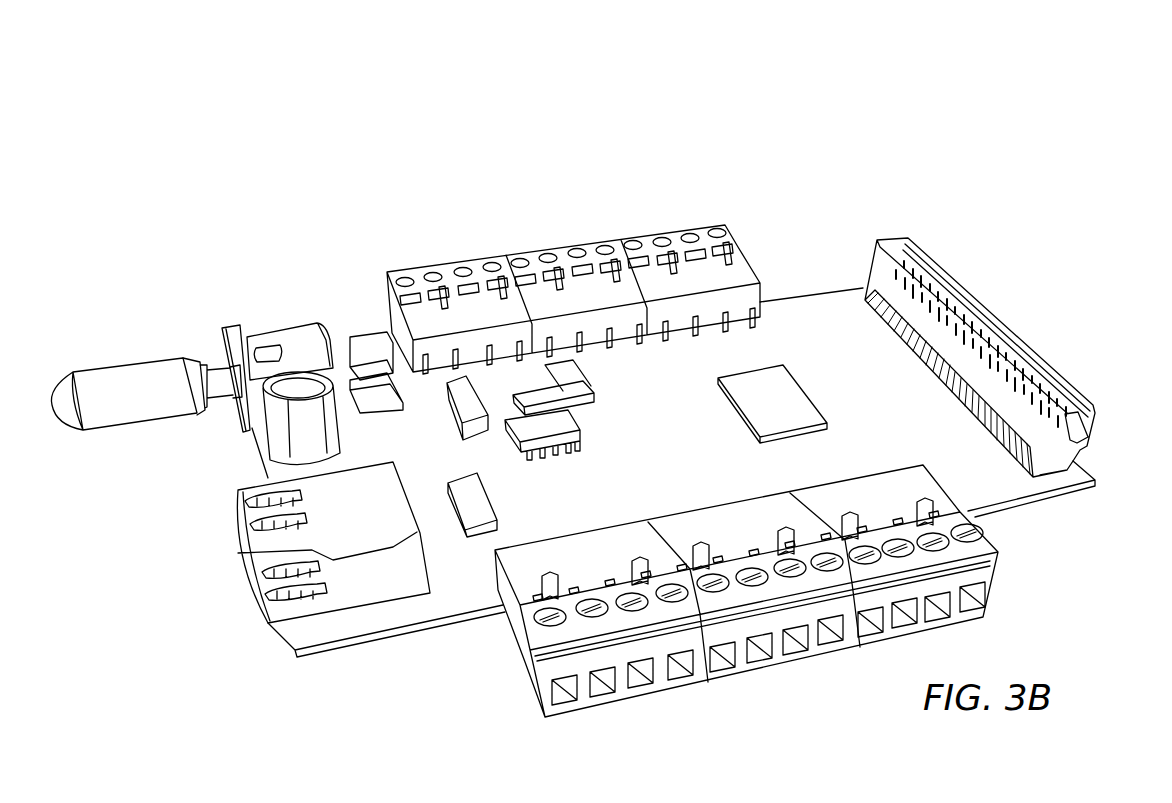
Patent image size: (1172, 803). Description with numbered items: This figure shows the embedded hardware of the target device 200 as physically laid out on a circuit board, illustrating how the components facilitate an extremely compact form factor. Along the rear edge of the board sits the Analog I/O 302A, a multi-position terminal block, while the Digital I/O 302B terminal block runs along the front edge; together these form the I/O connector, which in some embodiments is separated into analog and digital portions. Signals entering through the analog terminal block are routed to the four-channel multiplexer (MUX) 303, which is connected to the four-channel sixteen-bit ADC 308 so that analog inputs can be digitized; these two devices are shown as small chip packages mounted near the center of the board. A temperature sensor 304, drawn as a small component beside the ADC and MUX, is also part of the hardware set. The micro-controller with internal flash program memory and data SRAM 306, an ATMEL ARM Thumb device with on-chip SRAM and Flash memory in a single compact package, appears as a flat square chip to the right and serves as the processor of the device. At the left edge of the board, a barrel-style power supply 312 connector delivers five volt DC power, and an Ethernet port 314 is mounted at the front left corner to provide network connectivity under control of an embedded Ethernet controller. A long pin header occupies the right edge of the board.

The target device 200 is at (347, 113).
The Analog I/O 302A is at (705, 278).
The Digital I/O 302B is at (993, 563).
The 4-channel multiplexer (MUX) 303 is at (567, 372).
The 4-channel 16-bit ADC 308 is at (567, 372).
The temperature sensor 304 is at (451, 384).
The micro-controller with internal flash program memory and data SRAM 306 is at (788, 387).
The power supply 312 is at (260, 328).
The Ethernet port 314 is at (258, 520).